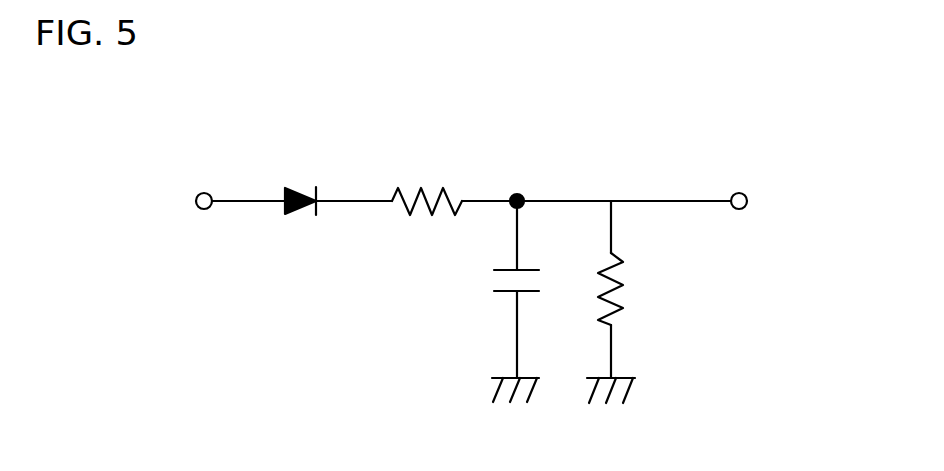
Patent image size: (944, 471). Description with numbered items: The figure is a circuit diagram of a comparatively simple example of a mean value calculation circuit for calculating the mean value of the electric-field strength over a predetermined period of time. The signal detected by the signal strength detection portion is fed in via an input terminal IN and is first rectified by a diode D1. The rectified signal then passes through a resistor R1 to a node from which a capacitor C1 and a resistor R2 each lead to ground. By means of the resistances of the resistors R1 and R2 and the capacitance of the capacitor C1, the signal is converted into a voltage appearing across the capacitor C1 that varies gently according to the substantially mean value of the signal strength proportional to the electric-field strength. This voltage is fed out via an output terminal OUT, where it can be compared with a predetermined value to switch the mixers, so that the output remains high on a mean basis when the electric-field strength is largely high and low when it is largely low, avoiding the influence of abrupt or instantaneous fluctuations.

The input terminal IN is at (222, 203).
The output terminal OUT is at (769, 201).
The diode D1 is at (338, 222).
The resistor R1 is at (454, 221).
The capacitor C1 is at (493, 301).
The resistor R2 is at (630, 302).